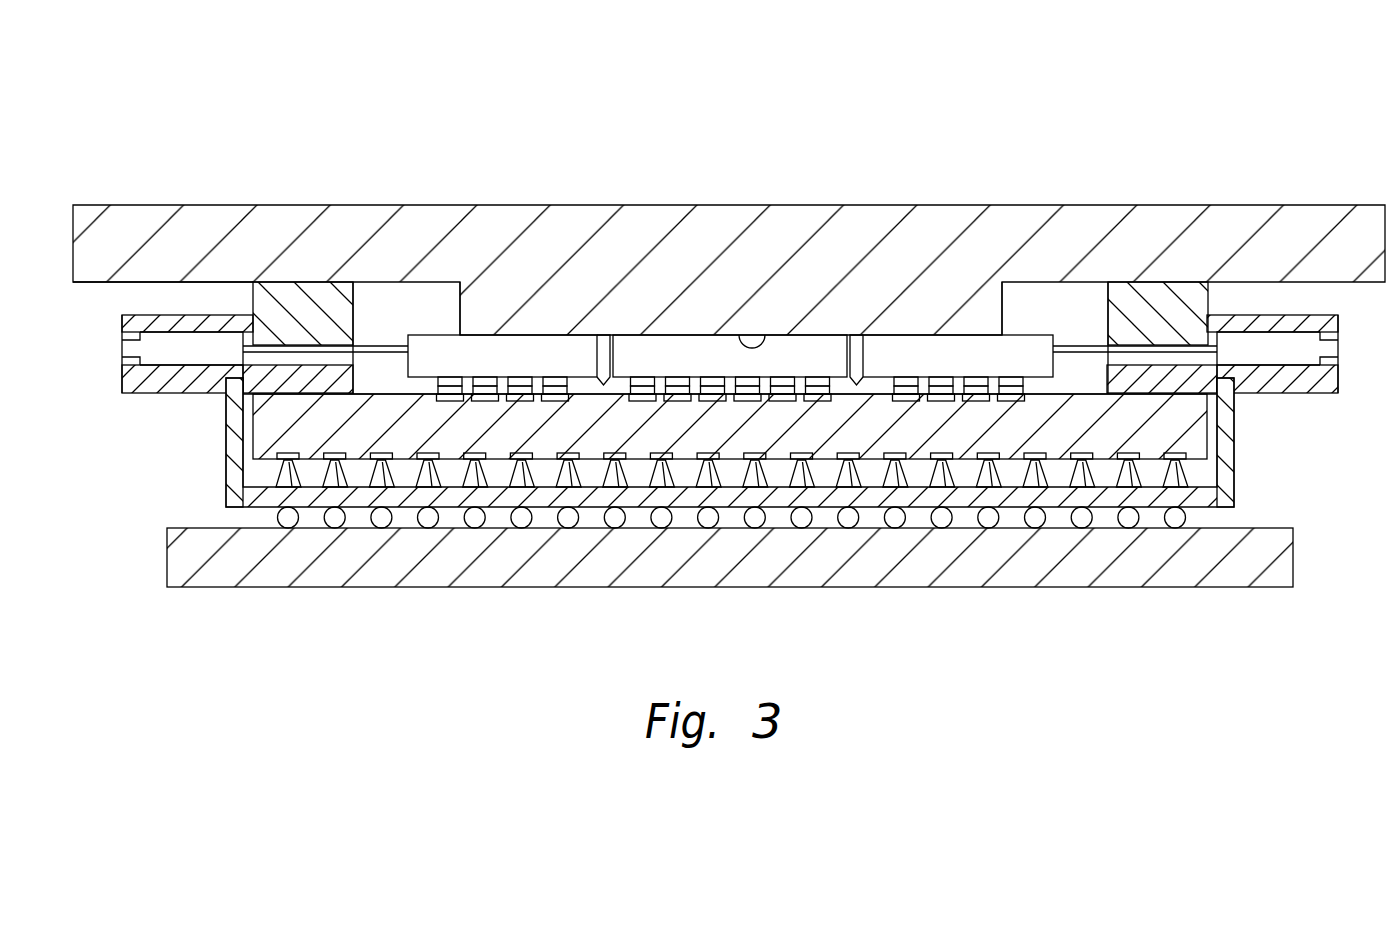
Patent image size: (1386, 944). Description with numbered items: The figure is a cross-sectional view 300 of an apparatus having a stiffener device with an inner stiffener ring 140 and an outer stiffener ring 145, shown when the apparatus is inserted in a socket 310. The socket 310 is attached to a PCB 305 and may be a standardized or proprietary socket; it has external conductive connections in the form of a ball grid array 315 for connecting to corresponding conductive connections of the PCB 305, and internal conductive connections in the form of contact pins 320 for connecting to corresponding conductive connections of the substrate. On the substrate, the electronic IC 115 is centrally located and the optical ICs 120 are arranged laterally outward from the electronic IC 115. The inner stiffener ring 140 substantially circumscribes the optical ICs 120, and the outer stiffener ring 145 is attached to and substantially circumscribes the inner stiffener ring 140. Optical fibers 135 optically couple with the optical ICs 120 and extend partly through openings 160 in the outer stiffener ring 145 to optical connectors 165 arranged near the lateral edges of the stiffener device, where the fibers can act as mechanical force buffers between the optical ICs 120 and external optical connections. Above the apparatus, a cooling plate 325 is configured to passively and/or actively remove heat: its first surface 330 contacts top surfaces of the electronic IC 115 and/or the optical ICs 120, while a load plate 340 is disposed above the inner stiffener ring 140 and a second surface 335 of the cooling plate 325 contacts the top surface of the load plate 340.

The cross-sectional view 300 is at (1273, 73).
The PCB 305 is at (167, 553).
The socket 310 is at (226, 460).
The ball grid array 315 is at (430, 518).
The contact pins 320 is at (592, 470).
The cooling plate 325 is at (137, 218).
The first surface 330 is at (758, 338).
The second surface 335 is at (132, 284).
The load plate 340 is at (333, 310).
The optical fibers 135 is at (383, 350).
The inner stiffener ring 140 is at (279, 362).
The outer stiffener ring 145 is at (693, 374).
The openings 160 is at (150, 367).
The optical connectors 165 is at (210, 355).
The optical ICs 120 is at (520, 348).
The electronic IC 115 is at (665, 348).